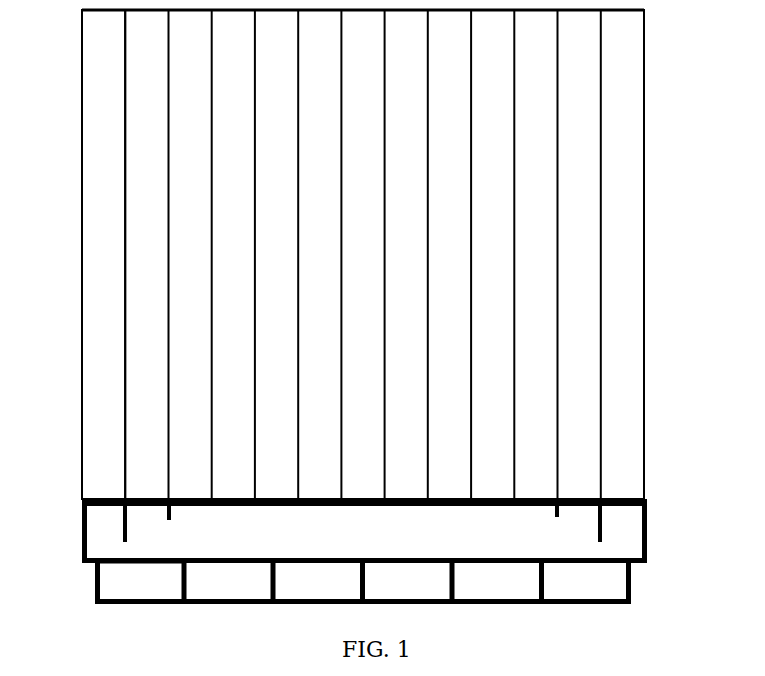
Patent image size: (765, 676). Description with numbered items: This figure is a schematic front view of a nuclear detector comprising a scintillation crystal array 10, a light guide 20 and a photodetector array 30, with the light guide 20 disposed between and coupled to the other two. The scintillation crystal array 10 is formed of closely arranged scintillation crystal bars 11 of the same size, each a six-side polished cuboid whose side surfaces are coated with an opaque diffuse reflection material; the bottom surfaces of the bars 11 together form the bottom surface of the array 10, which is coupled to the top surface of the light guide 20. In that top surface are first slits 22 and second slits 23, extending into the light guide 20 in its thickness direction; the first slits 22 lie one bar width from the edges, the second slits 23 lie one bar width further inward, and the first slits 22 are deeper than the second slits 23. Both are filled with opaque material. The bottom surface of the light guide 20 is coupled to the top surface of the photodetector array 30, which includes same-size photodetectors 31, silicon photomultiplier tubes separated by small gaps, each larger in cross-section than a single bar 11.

The scintillation crystal array 10 is at (628, 270).
The scintillation crystal bar 11 is at (93, 332).
The light guide 20 is at (638, 530).
The first slit 22 is at (121, 522).
The second slit 23 is at (172, 513).
The photodetector array 30 is at (620, 593).
The photodetector 31 is at (100, 588).